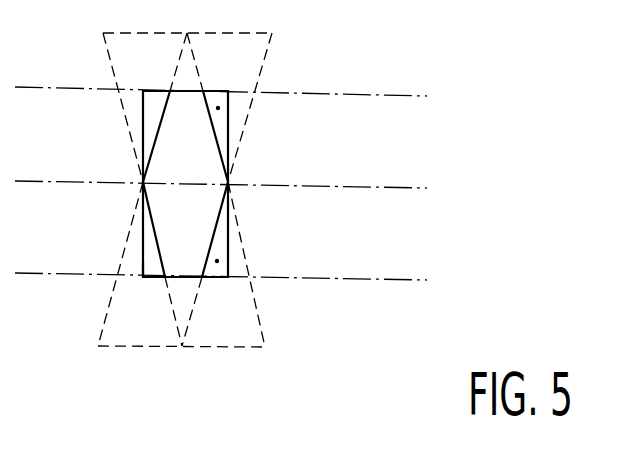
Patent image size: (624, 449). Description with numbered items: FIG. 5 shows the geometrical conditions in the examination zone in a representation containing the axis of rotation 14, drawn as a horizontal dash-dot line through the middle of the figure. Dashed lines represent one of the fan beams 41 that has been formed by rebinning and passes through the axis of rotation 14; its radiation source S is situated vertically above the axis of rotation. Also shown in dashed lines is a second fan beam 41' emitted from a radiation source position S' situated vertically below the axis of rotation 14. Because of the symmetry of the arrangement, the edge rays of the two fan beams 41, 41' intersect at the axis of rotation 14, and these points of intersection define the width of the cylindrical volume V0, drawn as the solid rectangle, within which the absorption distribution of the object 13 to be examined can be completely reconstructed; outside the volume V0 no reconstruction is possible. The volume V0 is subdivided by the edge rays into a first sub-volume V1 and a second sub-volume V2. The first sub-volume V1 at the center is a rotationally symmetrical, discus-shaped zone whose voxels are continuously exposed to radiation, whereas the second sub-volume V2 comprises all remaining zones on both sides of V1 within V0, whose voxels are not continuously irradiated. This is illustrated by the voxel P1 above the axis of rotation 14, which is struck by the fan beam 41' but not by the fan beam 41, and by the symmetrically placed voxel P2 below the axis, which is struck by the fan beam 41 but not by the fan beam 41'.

The object to be examined 13 is at (411, 95).
The axis of rotation 14 is at (410, 187).
The fan beam 41' is at (149, 107).
The fan beam 41 is at (216, 269).
The radiation source S is at (186, 48).
The radiation source position S' is at (183, 326).
The voxel P1 is at (218, 108).
The voxel P2 is at (217, 261).
The second sub-volume V2 is at (153, 106).
The first sub-volume V1 is at (162, 208).
The cylindrical volume V0 is at (146, 283).